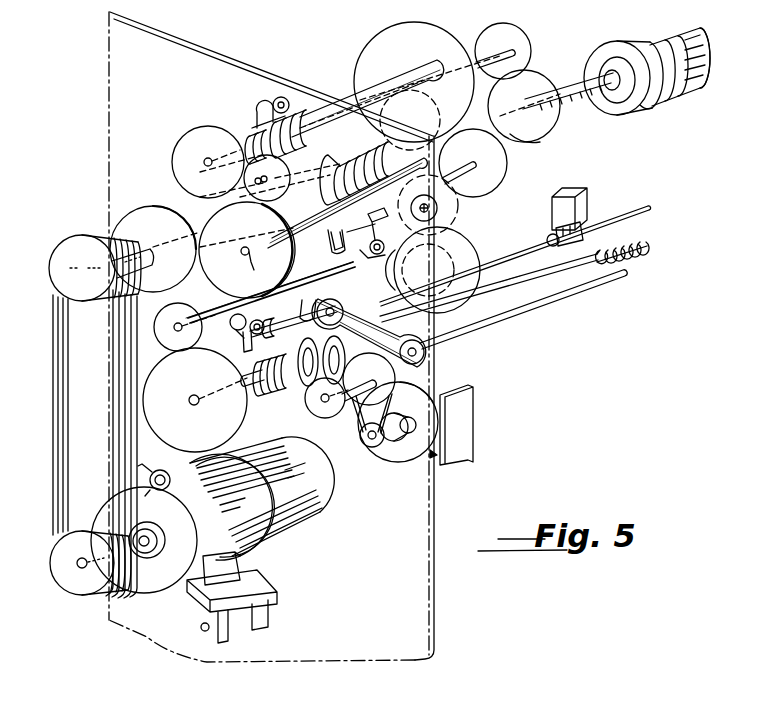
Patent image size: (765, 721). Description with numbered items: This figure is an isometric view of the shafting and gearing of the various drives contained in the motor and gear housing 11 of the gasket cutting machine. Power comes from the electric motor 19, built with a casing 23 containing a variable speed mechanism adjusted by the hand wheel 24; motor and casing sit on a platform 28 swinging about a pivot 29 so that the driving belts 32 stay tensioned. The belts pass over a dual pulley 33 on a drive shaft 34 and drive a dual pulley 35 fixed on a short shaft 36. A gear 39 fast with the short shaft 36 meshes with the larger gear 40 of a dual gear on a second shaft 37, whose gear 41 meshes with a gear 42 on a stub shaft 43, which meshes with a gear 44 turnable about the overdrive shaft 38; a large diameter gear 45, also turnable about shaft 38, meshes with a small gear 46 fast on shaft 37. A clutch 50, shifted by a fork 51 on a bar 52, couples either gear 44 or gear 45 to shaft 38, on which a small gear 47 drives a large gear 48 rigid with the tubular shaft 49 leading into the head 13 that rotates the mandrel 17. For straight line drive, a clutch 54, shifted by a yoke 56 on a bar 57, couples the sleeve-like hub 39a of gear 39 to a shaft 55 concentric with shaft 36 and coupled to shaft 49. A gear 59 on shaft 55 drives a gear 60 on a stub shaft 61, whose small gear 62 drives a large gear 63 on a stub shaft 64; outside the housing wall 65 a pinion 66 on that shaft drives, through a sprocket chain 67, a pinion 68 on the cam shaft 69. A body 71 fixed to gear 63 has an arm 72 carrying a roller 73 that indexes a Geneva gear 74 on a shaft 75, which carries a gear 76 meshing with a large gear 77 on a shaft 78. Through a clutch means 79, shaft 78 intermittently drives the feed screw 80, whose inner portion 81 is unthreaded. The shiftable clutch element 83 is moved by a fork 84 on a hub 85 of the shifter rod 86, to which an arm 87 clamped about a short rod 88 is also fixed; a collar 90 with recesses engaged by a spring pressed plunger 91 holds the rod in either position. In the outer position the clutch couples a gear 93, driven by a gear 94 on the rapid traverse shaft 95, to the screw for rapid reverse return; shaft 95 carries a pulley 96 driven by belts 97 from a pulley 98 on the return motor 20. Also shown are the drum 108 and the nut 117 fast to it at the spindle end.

The motor and gear housing 11 is at (351, 673).
The head 13 is at (658, 118).
The mandrel 17 is at (702, 89).
The electric motor 19 is at (322, 520).
The electric motor 20 is at (417, 443).
The casing 23 is at (250, 543).
The hand wheel 24 is at (152, 492).
The platform 28 is at (190, 606).
The pivot 29 is at (204, 632).
The driving belts 32 is at (62, 449).
The dual pulley 33 is at (75, 603).
The drive shaft 34 is at (78, 567).
The dual pulley 35 is at (66, 276).
The short shaft 36 is at (125, 245).
The second shaft 37 is at (247, 268).
The overdrive shaft 38 is at (486, 52).
The gear 39 is at (128, 222).
The sleeve-like hub 39a is at (193, 215).
The larger gear 40 is at (224, 250).
The gear 41 is at (296, 252).
The gear 42 is at (270, 176).
The stub shaft 43 is at (254, 181).
The gear 44 is at (217, 162).
The large diameter gear 45 is at (414, 82).
The small diameter gear 46 is at (473, 163).
The small diameter gear 47 is at (522, 36).
The large diameter gear 48 is at (542, 88).
The tubular shaft 49 is at (580, 104).
The clutch 50 is at (240, 120).
The fork 51 is at (256, 112).
The bar 52 is at (287, 98).
The clutch 54 is at (337, 150).
The shaft 55 is at (525, 140).
The yoke 56 is at (321, 175).
The bar 57 is at (332, 200).
The gear 59 is at (415, 112).
The gear 60 is at (464, 204).
The stub shaft 61 is at (455, 188).
The small gear 62 is at (448, 216).
The large gear 63 is at (484, 283).
The stub shaft 64 is at (482, 254).
The wall 65 is at (107, 73).
The pinion 66 is at (318, 322).
The sprocket chain 67 is at (427, 364).
The pinion 68 is at (424, 350).
The cam shaft 69 is at (552, 300).
The body 71 is at (480, 246).
The arm 72 is at (462, 238).
The roller 73 is at (395, 250).
The Geneva gear 74 is at (326, 240).
The shaft 75 is at (218, 306).
The gear 76 is at (182, 327).
The large diameter gear 77 is at (195, 400).
The shaft 78 is at (204, 404).
The clutch means 79 is at (278, 402).
The feed screw 80 is at (636, 252).
The inner portion of feed screw 81 is at (522, 284).
The shiftable clutch element 83 is at (300, 386).
The fork 84 is at (325, 384).
The hub 85 is at (282, 330).
The shifter rod 86 is at (250, 375).
The arm 87 is at (233, 328).
The short rod 88 is at (262, 324).
The collar 90 is at (578, 212).
The spring pressed plunger 91 is at (556, 230).
The gear 93 is at (340, 320).
The gear 94 is at (330, 418).
The rapid traverse shaft 95 is at (355, 434).
The pulley 96 is at (368, 379).
The belts 97 is at (388, 438).
The pulley 98 is at (373, 448).
The drum 108 is at (600, 50).
The nut 117 is at (656, 42).